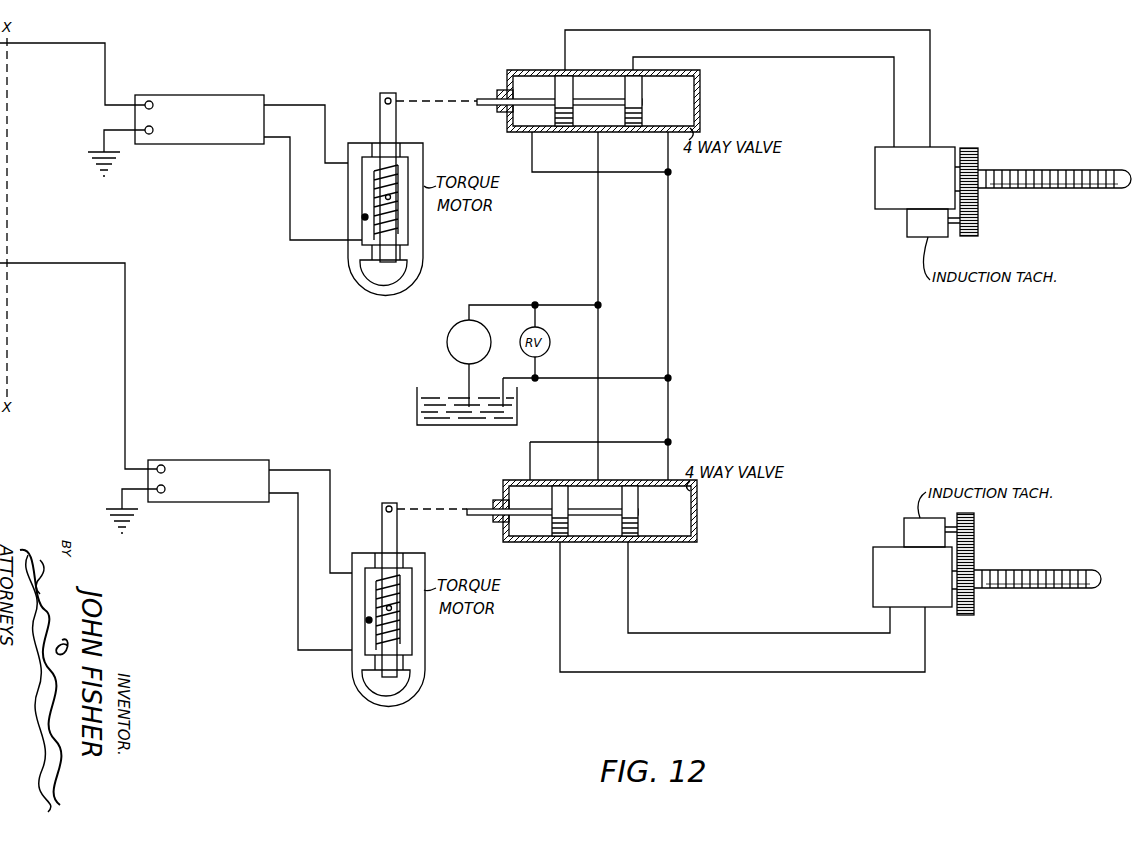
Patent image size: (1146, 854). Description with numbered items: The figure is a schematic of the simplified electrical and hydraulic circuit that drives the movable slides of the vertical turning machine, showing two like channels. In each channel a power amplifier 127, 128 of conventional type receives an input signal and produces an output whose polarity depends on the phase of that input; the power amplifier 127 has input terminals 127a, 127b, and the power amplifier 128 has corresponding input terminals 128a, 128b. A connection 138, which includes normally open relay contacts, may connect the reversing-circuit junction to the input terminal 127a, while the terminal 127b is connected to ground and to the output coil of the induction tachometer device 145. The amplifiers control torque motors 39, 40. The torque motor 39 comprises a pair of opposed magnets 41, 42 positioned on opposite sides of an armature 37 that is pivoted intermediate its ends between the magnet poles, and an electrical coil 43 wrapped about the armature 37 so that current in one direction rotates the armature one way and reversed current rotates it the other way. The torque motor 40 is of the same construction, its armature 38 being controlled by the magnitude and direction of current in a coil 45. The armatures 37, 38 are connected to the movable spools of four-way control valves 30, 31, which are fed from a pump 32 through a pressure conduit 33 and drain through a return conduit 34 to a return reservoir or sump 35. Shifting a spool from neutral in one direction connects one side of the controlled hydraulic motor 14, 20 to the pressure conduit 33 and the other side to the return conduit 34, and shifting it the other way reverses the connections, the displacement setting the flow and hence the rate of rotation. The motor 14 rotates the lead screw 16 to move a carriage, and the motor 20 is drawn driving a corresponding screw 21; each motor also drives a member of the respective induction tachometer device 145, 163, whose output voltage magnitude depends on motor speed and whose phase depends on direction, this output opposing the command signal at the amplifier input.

The power amplifier 128 is at (229, 146).
The input terminal of power amplifier 128a is at (150, 100).
The input terminal of power amplifier 128b is at (140, 123).
The connection 138 is at (86, 253).
The armature 38 is at (380, 107).
The coil 45 is at (393, 178).
The torque motor 40 is at (363, 217).
The four-way control valve 31 is at (556, 130).
The pressure conduit 33 is at (598, 264).
The return conduit 34 is at (668, 322).
The pump 32 is at (447, 342).
The return reservoir or sump 35 is at (432, 398).
The hydraulic motor 20 is at (875, 175).
The induction tachometer device 163 is at (907, 232).
The lead screw 21 is at (1076, 190).
The four-way control valve 30 is at (697, 517).
The power amplifier 127 is at (258, 462).
The input terminal of power amplifier 127a is at (157, 465).
The input terminal of power amplifier 127b is at (148, 488).
The armature 37 is at (398, 540).
The electrical coil 43 is at (395, 586).
The torque motor 39 is at (367, 620).
The magnet 41 is at (356, 665).
The magnet 42 is at (428, 665).
The hydraulic motor 14 is at (873, 561).
The induction tachometer-type device 145 is at (904, 529).
The lead screw 16 is at (1072, 548).